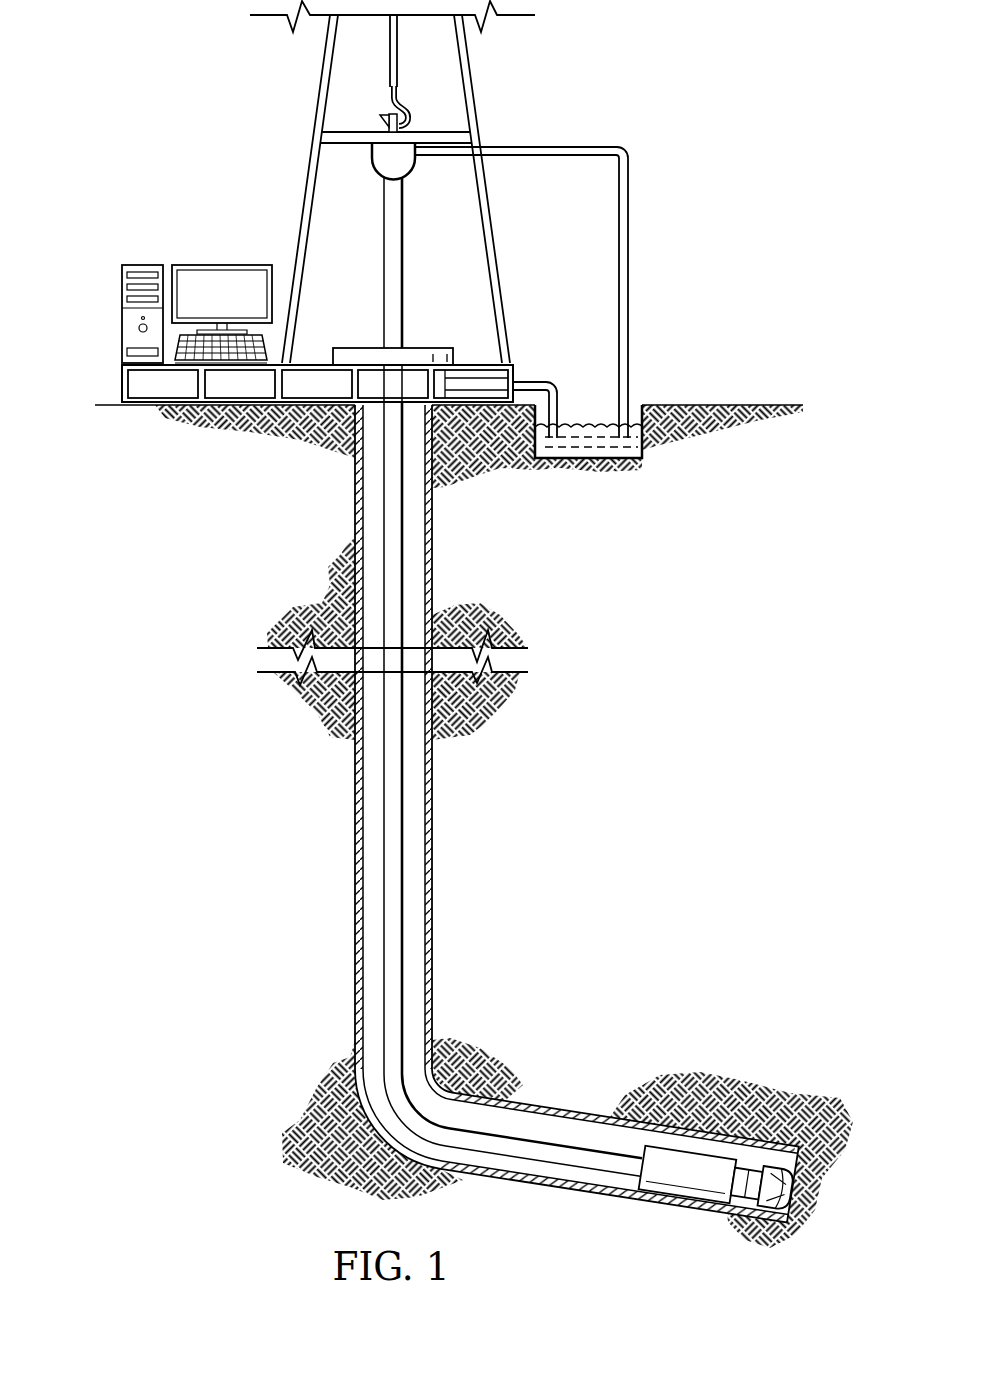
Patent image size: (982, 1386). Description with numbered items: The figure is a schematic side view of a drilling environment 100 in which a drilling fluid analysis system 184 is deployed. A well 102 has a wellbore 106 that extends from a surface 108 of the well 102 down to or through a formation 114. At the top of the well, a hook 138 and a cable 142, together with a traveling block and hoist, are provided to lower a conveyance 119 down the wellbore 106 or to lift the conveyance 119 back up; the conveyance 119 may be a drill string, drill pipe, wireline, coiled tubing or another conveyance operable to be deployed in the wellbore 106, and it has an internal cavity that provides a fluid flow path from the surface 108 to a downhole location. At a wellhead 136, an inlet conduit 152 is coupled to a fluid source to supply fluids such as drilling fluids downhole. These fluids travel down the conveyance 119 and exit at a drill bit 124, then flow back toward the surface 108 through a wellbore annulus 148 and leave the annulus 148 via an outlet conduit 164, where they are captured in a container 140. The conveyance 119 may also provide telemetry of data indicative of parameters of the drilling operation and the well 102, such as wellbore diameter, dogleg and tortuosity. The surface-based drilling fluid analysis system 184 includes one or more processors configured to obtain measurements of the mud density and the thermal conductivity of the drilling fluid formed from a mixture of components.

The drilling environment 100 is at (125, 112).
The well 102 is at (422, 338).
The wellbore 106 is at (430, 557).
The surface 108 is at (773, 403).
The formation 114 is at (598, 1070).
The conveyance 119 is at (393, 922).
The drill bit 124 is at (773, 1213).
The wellhead 136 is at (358, 348).
The hook 138 is at (410, 115).
The container 140 is at (593, 457).
The cable 142 is at (387, 75).
The wellbore annulus 148 is at (372, 488).
The inlet conduit 152 is at (572, 148).
The outlet conduit 164 is at (535, 372).
The drilling fluid analysis system 184 is at (142, 262).